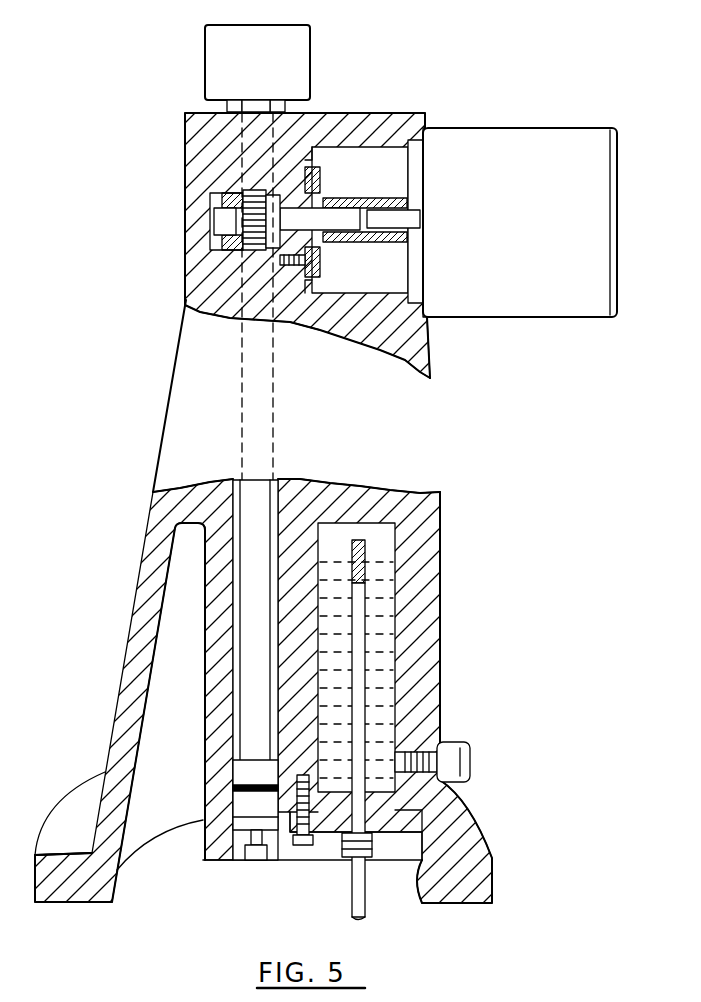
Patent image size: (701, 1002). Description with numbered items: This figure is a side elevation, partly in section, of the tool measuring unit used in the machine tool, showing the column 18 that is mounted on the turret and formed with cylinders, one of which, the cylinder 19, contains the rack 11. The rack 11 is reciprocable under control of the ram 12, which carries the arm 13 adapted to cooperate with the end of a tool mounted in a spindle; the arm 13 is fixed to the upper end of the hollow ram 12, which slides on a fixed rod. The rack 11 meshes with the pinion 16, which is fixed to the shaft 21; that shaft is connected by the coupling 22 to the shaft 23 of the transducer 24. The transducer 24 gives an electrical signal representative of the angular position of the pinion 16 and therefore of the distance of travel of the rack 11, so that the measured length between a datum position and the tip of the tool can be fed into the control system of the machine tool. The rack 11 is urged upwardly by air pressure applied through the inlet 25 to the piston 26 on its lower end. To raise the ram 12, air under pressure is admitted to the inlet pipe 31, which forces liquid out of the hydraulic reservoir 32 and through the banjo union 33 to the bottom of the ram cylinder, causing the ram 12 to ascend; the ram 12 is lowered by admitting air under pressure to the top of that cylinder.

The rack 11 is at (252, 693).
The ram 12 is at (285, 108).
The arm 13 is at (302, 47).
The pinion 16 is at (243, 195).
The column 18 is at (128, 690).
The cylinder 19 is at (235, 730).
The shaft 21 is at (325, 220).
The coupling 22 is at (370, 243).
The shaft of a transducer 23 is at (400, 215).
The transducer 24 is at (500, 138).
The inlet 25 is at (255, 866).
The piston 26 is at (243, 775).
The inlet pipe 31 is at (365, 553).
The hydraulic reservoir 32 is at (400, 600).
The banjo union 33 is at (450, 745).